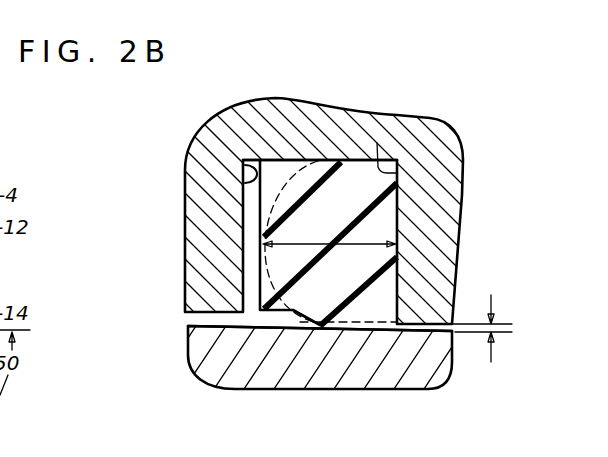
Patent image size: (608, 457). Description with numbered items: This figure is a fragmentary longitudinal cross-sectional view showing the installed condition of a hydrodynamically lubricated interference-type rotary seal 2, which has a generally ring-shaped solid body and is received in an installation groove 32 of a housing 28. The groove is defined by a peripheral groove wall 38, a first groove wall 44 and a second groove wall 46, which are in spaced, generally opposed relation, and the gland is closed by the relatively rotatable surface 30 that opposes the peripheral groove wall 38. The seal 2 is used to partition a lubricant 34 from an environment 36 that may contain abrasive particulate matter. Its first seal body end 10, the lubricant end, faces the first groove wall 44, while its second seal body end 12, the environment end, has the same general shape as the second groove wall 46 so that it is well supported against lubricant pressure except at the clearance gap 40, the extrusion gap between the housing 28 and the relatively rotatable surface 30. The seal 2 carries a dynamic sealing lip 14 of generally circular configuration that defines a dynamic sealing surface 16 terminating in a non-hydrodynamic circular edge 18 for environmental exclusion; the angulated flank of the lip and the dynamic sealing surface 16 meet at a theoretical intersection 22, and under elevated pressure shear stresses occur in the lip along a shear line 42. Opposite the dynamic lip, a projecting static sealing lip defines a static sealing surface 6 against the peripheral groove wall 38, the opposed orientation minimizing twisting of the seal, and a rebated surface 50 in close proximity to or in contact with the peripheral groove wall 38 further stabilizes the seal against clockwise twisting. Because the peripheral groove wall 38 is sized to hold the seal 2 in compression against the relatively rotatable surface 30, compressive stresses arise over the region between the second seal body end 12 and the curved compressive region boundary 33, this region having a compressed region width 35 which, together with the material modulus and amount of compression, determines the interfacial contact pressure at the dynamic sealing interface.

The seal 2 is at (250, 110).
The static sealing surface 6 is at (360, 158).
The first seal body end 10 is at (262, 260).
The second seal body end 12 is at (440, 215).
The dynamic sealing lip 14 is at (372, 316).
The dynamic sealing surface 16 is at (368, 328).
The non-hydrodynamic circular edge 18 is at (400, 329).
The theoretical intersection 22 is at (316, 327).
The housing 28 is at (306, 132).
The relatively rotatable surface 30 is at (235, 310).
The installation groove 32 is at (260, 226).
The curved compressive region boundary 33 is at (205, 373).
The lubricant 34 is at (197, 319).
The compressed region width 35 is at (397, 245).
The environment 36 is at (432, 390).
The peripheral groove wall 38 is at (246, 196).
The clearance gap 40 is at (406, 344).
The shear line 42 is at (350, 327).
The first groove wall 44 is at (247, 167).
The second groove wall 46 is at (377, 143).
The rebated surface 50 is at (285, 158).